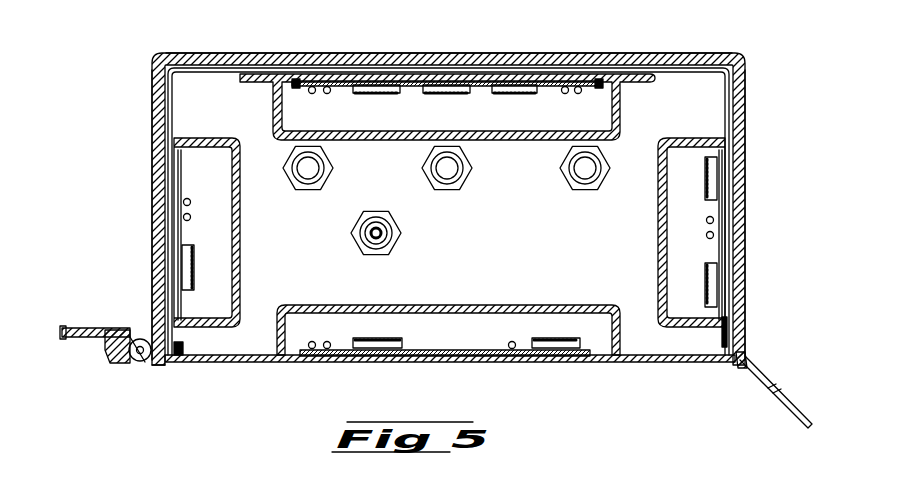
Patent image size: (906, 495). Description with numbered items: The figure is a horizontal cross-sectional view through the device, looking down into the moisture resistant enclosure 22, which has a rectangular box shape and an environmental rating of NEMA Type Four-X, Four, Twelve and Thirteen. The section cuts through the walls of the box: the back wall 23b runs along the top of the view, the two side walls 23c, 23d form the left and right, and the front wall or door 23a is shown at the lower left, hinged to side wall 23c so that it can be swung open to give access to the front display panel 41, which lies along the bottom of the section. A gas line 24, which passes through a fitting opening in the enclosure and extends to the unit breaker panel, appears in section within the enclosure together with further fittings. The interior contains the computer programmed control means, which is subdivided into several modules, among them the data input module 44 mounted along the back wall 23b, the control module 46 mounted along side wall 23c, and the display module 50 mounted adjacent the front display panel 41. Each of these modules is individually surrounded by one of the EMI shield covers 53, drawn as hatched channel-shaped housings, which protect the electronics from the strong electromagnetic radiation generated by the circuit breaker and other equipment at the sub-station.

The enclosure 22 is at (742, 107).
The front wall or door 23a is at (70, 328).
The back wall 23b is at (427, 42).
The side wall 23c is at (150, 183).
The side wall 23d is at (740, 210).
The gas line 24 is at (398, 245).
The front display panel 41 is at (632, 362).
The data input module 44 is at (552, 88).
The control module 46 is at (183, 308).
The display module 50 is at (437, 357).
The EMI shield covers 53 is at (241, 244).